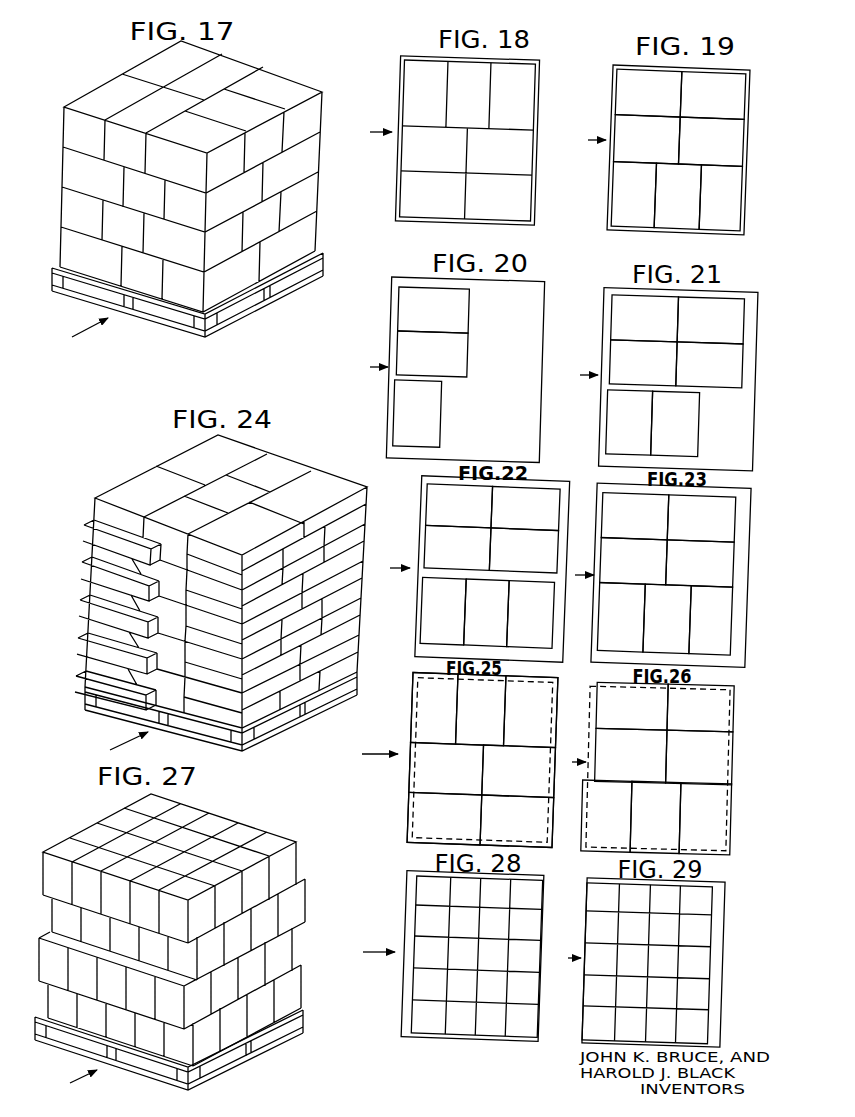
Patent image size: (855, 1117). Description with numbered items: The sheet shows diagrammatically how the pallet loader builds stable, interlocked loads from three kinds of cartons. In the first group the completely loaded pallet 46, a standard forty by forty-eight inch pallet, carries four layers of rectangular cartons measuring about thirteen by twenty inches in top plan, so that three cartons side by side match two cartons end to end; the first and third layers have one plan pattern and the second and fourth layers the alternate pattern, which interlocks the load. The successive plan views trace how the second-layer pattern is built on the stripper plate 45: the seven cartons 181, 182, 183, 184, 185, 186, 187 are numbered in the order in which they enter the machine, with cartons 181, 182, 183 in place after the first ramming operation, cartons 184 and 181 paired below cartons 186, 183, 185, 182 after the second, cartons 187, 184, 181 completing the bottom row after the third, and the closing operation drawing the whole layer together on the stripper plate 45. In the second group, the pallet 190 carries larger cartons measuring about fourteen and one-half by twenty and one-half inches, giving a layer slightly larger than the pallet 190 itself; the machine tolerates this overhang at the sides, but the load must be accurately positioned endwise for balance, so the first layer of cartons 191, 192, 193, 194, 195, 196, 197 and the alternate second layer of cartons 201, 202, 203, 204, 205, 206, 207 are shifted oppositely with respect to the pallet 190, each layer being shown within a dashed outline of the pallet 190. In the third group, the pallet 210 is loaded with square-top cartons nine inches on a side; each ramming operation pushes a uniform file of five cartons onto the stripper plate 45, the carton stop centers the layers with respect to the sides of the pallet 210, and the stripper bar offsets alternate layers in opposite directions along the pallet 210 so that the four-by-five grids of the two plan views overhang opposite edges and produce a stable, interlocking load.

In FIG. 20, the stripper plate 45 is at (538, 418).
In FIG. 21, the stripper plate 45 is at (752, 432).
In FIG. 22, the stripper plate 45 is at (423, 525).
In FIG. 23, the stripper plate 45 is at (742, 590).
In FIG. 17, the pallet 46 is at (273, 290).
In FIG. 18, the pallet 46 is at (535, 172).
In FIG. 19, the pallet 46 is at (748, 152).
In FIG. 19, the carton 181 is at (720, 198).
In FIG. 20, the carton 181 is at (417, 413).
In FIG. 21, the carton 181 is at (675, 423).
In FIG. 22, the carton 181 is at (531, 615).
In FIG. 23, the carton 181 is at (711, 620).
In FIG. 19, the carton 182 is at (711, 141).
In FIG. 20, the carton 182 is at (432, 354).
In FIG. 21, the carton 182 is at (709, 365).
In FIG. 22, the carton 182 is at (523, 550).
In FIG. 23, the carton 182 is at (700, 563).
In FIG. 19, the carton 183 is at (713, 96).
In FIG. 20, the carton 183 is at (434, 310).
In FIG. 21, the carton 183 is at (710, 320).
In FIG. 22, the carton 183 is at (525, 508).
In FIG. 23, the carton 183 is at (701, 518).
In FIG. 19, the carton 184 is at (677, 196).
In FIG. 21, the carton 184 is at (629, 422).
In FIG. 22, the carton 184 is at (487, 613).
In FIG. 23, the carton 184 is at (667, 619).
In FIG. 19, the carton 185 is at (647, 139).
In FIG. 21, the carton 185 is at (643, 363).
In FIG. 22, the carton 185 is at (457, 547).
In FIG. 23, the carton 185 is at (634, 561).
In FIG. 19, the carton 186 is at (648, 93).
In FIG. 21, the carton 186 is at (645, 318).
In FIG. 22, the carton 186 is at (459, 506).
In FIG. 23, the carton 186 is at (635, 516).
In FIG. 19, the carton 187 is at (633, 195).
In FIG. 22, the carton 187 is at (443, 611).
In FIG. 23, the carton 187 is at (621, 618).
In FIG. 24, the pallet 190 is at (288, 712).
In FIG. 25, the pallet 190 is at (412, 797).
In FIG. 26, the pallet 190 is at (733, 809).
In FIG. 25, the carton 191 is at (517, 821).
In FIG. 25, the carton 192 is at (519, 771).
In FIG. 25, the carton 193 is at (531, 712).
In FIG. 25, the carton 194 is at (444, 818).
In FIG. 25, the carton 195 is at (446, 768).
In FIG. 25, the carton 196 is at (481, 710).
In FIG. 25, the carton 197 is at (434, 709).
In FIG. 26, the carton 201 is at (705, 819).
In FIG. 26, the carton 202 is at (699, 757).
In FIG. 26, the carton 203 is at (700, 708).
In FIG. 26, the carton 204 is at (655, 817).
In FIG. 26, the carton 205 is at (631, 755).
In FIG. 26, the carton 206 is at (632, 706).
In FIG. 26, the carton 207 is at (606, 816).
In FIG. 27, the pallet 210 is at (253, 1047).
In FIG. 28, the pallet 210 is at (408, 982).
In FIG. 29, the pallet 210 is at (715, 940).